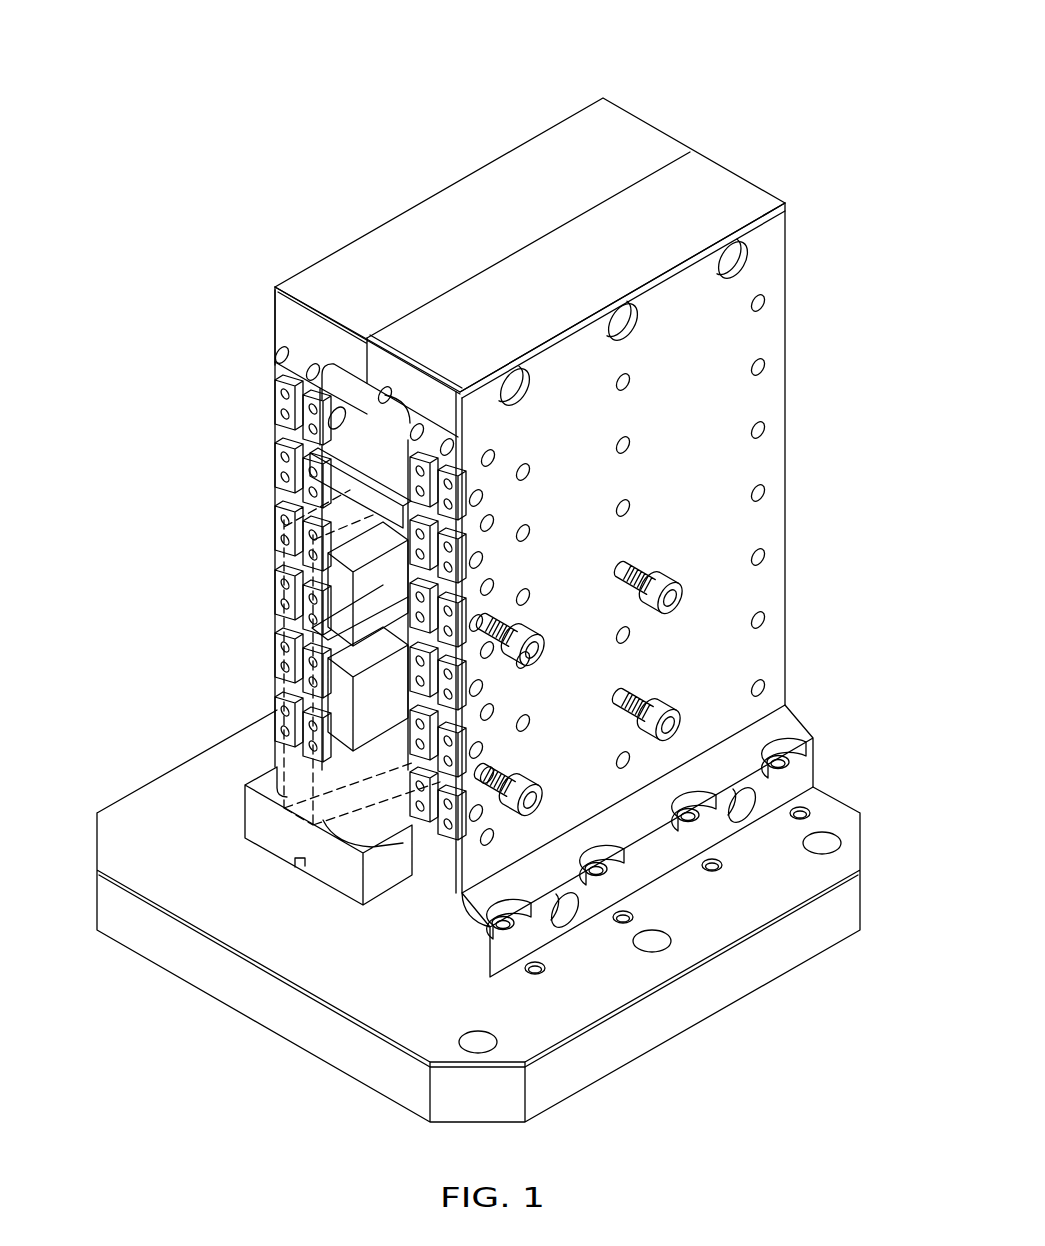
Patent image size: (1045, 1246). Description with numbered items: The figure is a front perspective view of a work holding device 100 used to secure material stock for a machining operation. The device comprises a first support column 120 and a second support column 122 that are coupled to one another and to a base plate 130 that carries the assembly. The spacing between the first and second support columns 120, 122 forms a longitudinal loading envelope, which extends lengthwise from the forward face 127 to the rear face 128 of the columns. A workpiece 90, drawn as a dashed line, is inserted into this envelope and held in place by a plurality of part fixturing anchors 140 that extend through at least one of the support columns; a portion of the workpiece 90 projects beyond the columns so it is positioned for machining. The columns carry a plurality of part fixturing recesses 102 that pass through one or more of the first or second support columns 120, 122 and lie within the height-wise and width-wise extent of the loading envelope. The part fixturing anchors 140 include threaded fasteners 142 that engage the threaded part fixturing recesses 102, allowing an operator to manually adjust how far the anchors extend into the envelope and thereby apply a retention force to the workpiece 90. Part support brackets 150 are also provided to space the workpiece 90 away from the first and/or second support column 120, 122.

The work holding device 100 is at (710, 93).
The first support column 120 is at (560, 136).
The second support column 122 is at (738, 187).
The forward face 127 is at (278, 330).
The rear face 128 is at (790, 315).
The part fixturing recesses 102 is at (628, 446).
The part fixturing anchors 140 is at (533, 771).
The threaded fasteners 142 is at (540, 777).
The part support brackets 150 is at (343, 700).
The workpiece 90 is at (270, 634).
The base plate 130 is at (860, 817).